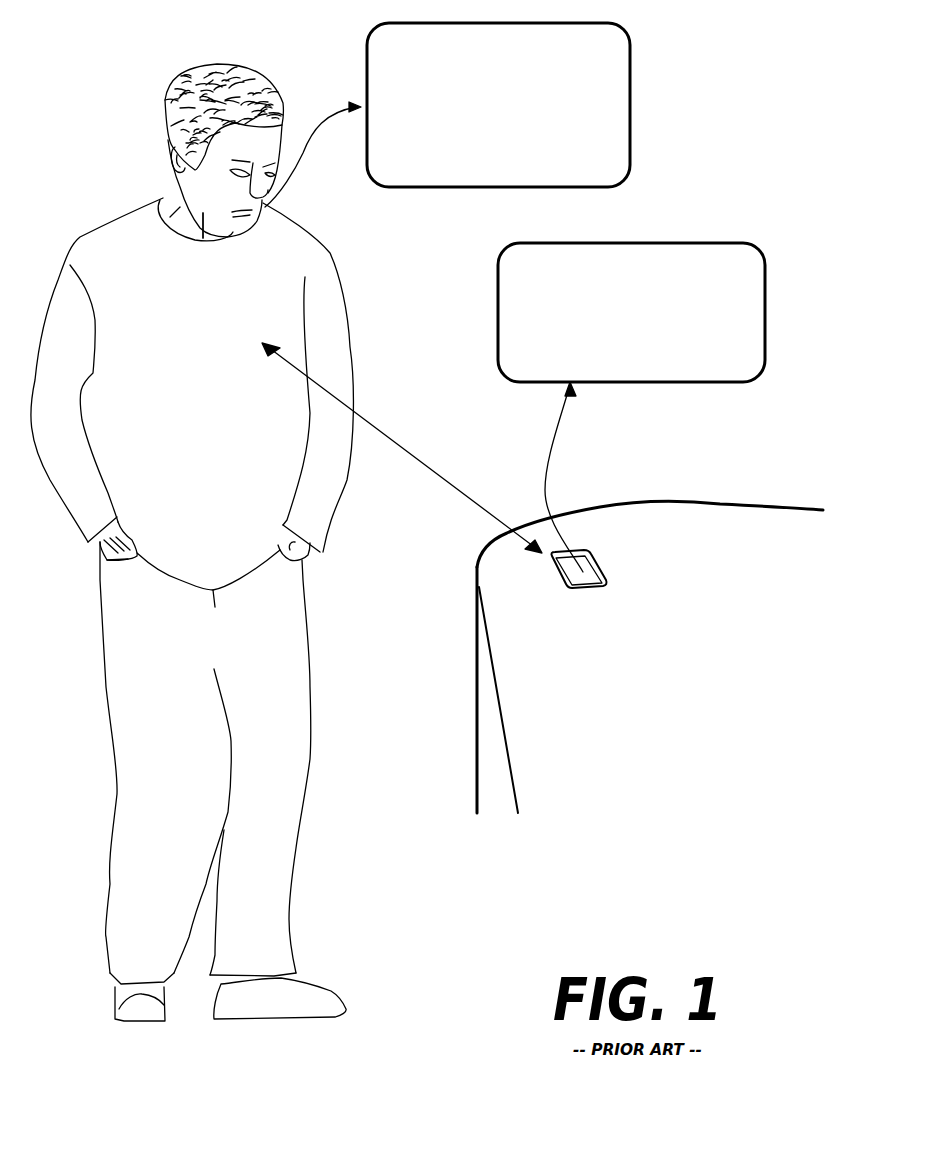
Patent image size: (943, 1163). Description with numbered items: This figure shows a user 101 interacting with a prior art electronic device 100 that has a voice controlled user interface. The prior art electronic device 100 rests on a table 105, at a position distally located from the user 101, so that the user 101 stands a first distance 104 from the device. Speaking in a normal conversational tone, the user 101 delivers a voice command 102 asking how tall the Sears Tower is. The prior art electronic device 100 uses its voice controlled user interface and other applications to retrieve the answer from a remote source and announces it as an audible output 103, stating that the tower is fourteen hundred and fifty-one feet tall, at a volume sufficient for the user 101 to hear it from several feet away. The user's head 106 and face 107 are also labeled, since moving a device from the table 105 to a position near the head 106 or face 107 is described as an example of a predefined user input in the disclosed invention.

The prior art electronic device 100 is at (607, 583).
The user 101 is at (192, 525).
The voice command 102 is at (633, 77).
The audible output 103 is at (765, 292).
The first distance 104 is at (437, 475).
The table 105 is at (783, 570).
The user's head 106 is at (170, 97).
The user's face 107 is at (205, 230).